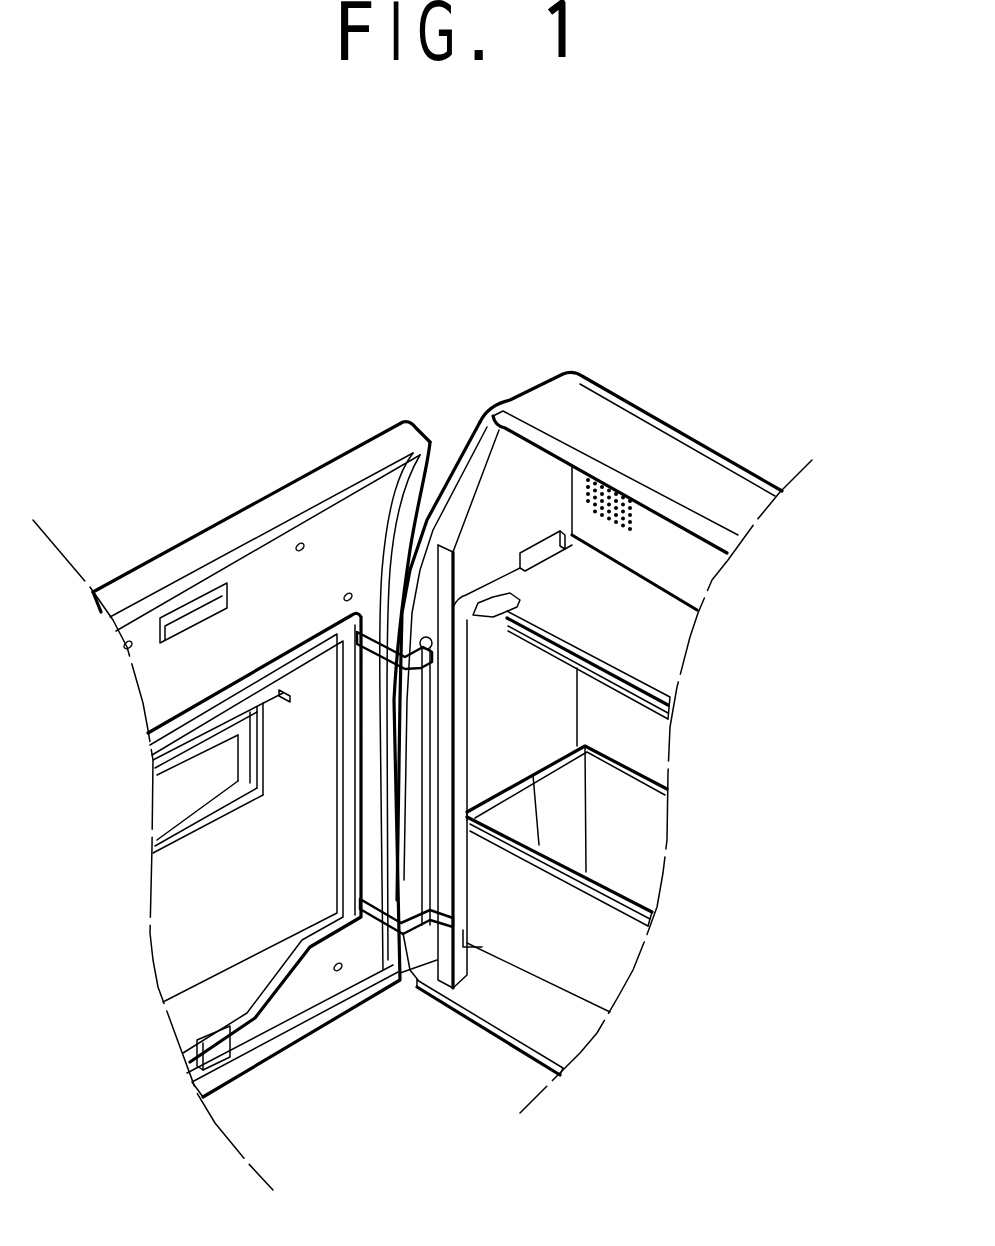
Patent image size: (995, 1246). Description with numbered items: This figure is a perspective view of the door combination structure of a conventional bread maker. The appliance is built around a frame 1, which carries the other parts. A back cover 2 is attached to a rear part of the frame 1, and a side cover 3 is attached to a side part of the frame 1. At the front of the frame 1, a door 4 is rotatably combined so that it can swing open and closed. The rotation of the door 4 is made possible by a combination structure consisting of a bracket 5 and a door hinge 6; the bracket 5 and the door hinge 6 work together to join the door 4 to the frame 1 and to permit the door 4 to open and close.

The frame 1 is at (494, 405).
The back cover 2 is at (648, 407).
The side cover 3 is at (461, 440).
The door 4 is at (237, 507).
The bracket 5 is at (434, 988).
The door hinge 6 is at (361, 925).